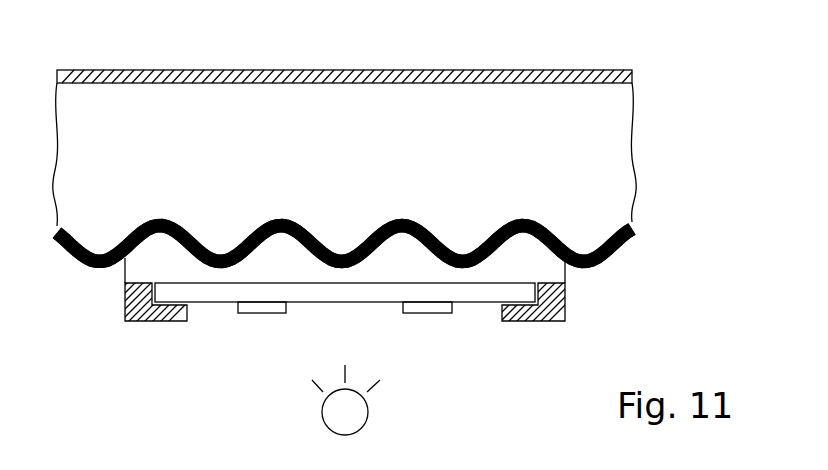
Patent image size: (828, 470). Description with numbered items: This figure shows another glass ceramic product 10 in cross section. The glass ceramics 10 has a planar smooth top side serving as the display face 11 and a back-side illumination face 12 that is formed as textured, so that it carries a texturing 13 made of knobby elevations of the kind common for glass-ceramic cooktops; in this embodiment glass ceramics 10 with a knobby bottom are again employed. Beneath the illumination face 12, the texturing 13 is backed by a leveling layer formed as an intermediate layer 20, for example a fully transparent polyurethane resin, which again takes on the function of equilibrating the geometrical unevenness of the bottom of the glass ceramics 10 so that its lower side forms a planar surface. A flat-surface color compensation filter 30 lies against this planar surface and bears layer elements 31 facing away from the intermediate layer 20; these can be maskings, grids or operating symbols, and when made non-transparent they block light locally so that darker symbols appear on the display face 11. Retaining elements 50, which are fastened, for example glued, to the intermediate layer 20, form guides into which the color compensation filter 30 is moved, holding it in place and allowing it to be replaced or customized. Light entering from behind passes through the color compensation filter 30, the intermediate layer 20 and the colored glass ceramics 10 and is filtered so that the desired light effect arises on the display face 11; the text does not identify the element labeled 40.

The glass ceramic product 10 is at (475, 95).
The display face 11 is at (399, 70).
The illumination face 12 is at (622, 262).
The texturing 13 is at (545, 241).
The intermediate layer 20 is at (213, 271).
The color compensation filter 30 is at (490, 290).
The layer elements 31 is at (263, 313).
The support bracket 40 is at (139, 312).
The retaining elements 50 is at (340, 418).